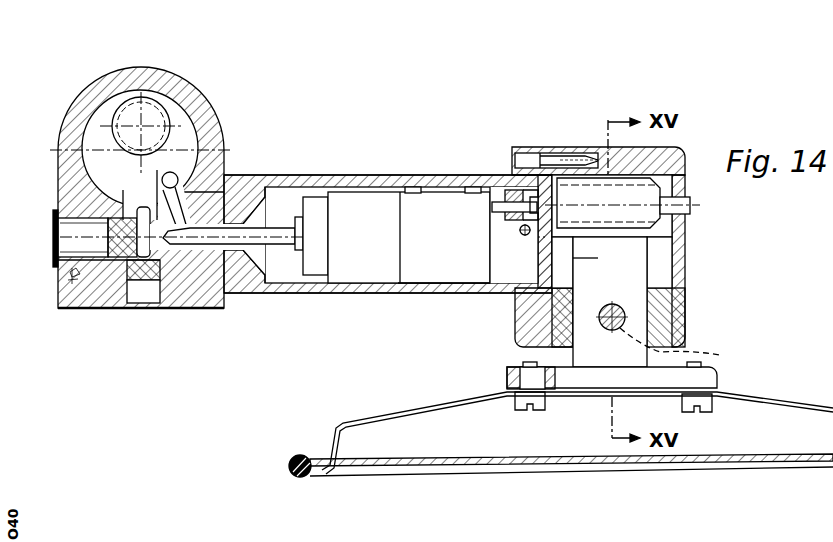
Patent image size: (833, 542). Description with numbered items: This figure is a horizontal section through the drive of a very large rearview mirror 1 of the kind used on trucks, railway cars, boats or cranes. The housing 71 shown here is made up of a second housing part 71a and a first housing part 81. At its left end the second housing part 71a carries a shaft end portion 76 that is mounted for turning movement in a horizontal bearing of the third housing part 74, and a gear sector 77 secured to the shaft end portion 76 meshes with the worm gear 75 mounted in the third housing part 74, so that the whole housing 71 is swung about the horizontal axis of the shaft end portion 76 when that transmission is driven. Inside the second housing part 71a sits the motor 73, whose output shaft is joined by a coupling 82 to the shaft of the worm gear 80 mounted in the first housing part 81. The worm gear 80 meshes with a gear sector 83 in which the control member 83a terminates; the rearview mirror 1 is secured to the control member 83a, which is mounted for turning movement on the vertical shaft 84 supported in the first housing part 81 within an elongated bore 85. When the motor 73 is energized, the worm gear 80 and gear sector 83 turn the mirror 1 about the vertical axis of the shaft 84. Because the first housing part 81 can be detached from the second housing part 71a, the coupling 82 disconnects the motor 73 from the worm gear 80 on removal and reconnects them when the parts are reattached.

The rearview mirror 1 is at (703, 468).
The housing 71 is at (332, 175).
The second housing part 71a is at (375, 175).
The motor 73 is at (437, 200).
The third housing part 74 is at (224, 120).
The worm gear 75 is at (128, 115).
The shaft end portion 76 is at (185, 295).
The gear sector 77 is at (158, 157).
The worm gear 80 is at (690, 217).
The first housing part 81 is at (686, 245).
The coupling 82 is at (497, 172).
The gear sector 83 is at (686, 290).
The control member 83a is at (596, 348).
The vertical shaft 84 is at (688, 327).
The elongated bore 85 is at (683, 347).